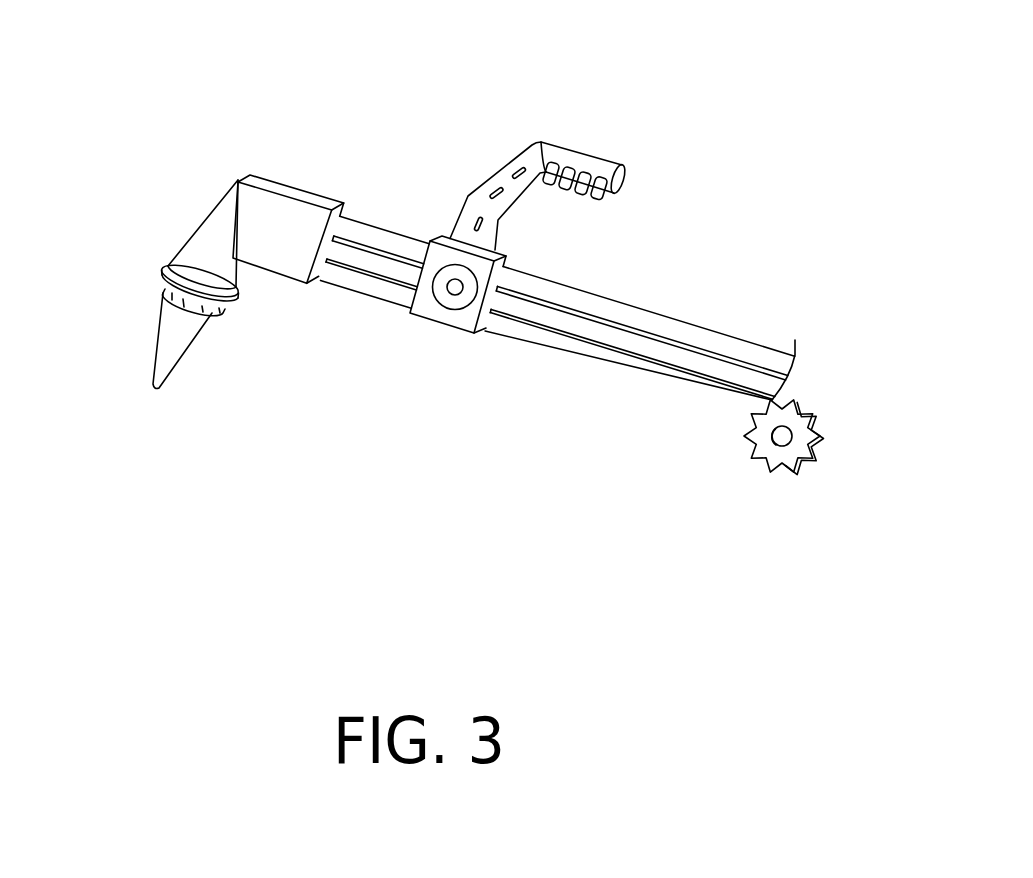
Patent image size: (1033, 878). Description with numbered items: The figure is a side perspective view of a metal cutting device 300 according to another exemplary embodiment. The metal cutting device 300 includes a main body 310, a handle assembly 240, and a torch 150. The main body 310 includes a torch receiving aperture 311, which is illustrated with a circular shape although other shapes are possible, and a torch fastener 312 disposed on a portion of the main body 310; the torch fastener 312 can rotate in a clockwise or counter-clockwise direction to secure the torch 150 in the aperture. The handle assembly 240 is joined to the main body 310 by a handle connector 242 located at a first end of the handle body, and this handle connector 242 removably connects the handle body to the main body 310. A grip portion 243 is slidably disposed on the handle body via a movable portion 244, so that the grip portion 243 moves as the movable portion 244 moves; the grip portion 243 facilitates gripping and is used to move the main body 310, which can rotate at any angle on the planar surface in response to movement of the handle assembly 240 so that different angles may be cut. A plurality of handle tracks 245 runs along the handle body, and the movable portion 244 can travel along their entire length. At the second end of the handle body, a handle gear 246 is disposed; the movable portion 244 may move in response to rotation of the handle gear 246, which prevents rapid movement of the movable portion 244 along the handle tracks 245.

The metal cutting device 300 is at (76, 88).
The handle assembly 240 is at (686, 280).
The handle connector 242 is at (287, 193).
The grip portion 243 is at (626, 162).
The movable portion 244 is at (462, 329).
The plurality of handle tracks 245 is at (692, 352).
The handle gear 246 is at (815, 413).
The main body 310 is at (203, 258).
The torch receiving aperture 311 is at (172, 295).
The torch fastener 312 is at (228, 303).
The torch 150 is at (165, 331).